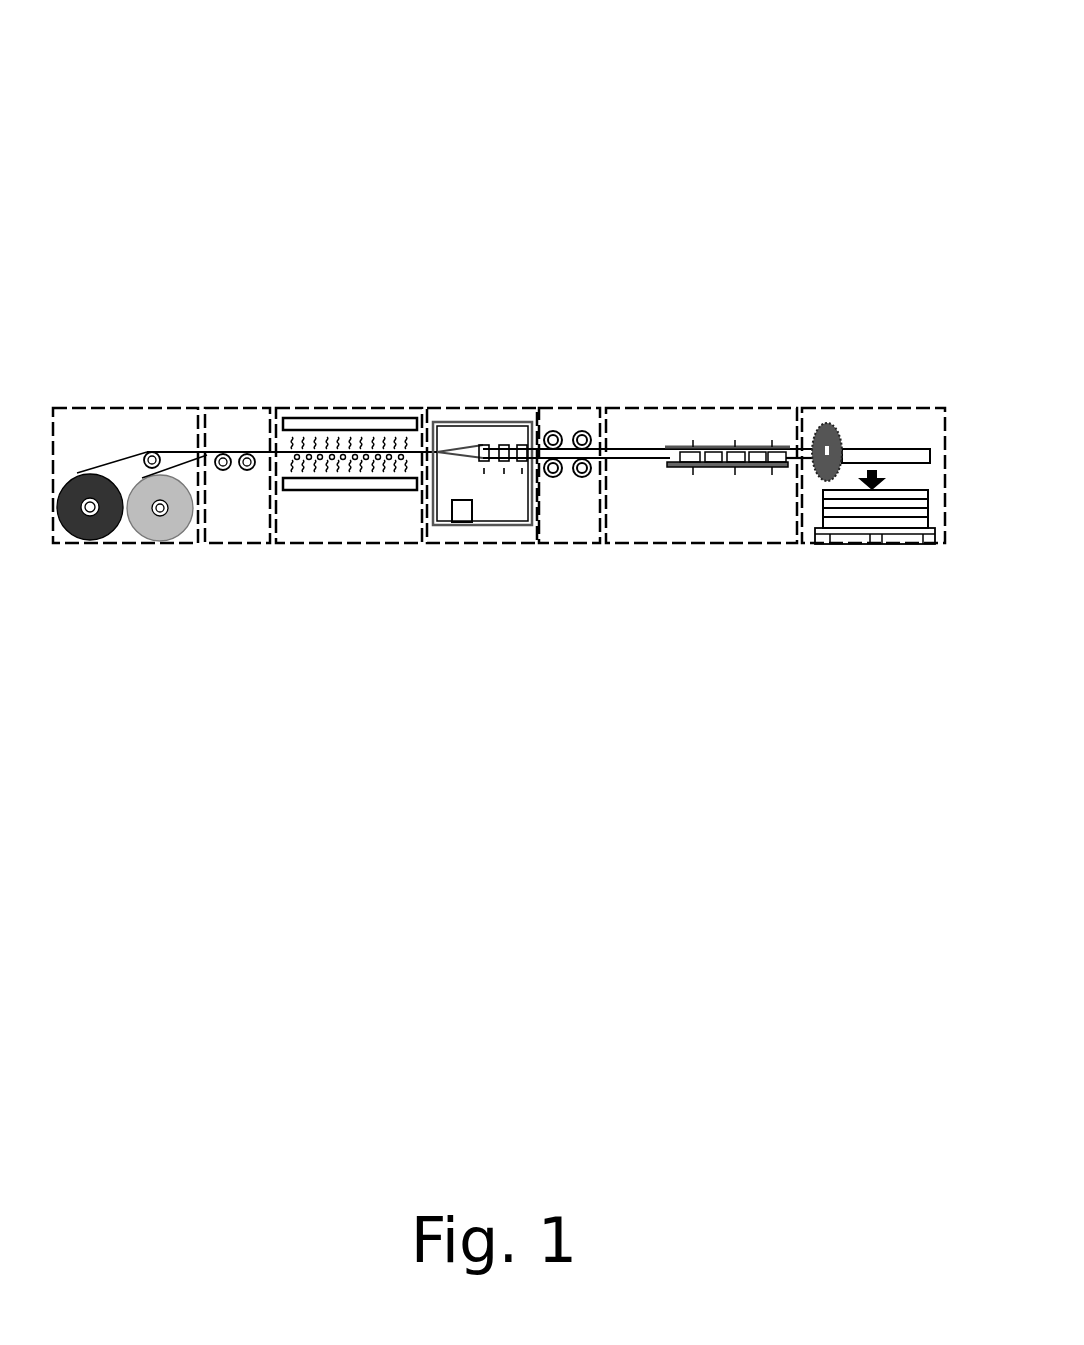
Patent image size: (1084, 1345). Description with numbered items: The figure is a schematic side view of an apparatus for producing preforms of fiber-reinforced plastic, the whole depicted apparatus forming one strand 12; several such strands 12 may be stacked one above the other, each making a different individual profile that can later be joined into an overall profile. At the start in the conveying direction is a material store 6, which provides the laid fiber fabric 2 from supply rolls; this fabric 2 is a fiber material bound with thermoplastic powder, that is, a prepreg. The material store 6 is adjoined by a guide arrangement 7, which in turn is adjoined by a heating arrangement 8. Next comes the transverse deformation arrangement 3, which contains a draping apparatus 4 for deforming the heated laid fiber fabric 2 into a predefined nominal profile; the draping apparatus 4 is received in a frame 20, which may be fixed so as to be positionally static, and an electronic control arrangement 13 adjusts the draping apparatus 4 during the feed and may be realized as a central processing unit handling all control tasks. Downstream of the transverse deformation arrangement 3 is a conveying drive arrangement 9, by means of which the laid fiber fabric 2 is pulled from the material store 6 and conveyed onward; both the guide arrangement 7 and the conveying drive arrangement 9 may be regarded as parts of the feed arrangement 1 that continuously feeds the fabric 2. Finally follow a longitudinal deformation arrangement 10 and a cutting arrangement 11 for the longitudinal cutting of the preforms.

The strand 12 is at (285, 182).
The material store 6 is at (173, 413).
The feed arrangement 1 is at (410, 368).
The guide arrangement 7 is at (238, 413).
The laid fiber fabric 2 is at (263, 453).
The heating arrangement 8 is at (360, 413).
The transverse deformation arrangement 3 is at (487, 413).
The frame 20 is at (500, 527).
The electronic control arrangement 13 is at (462, 513).
The draping apparatus 4 is at (490, 456).
The conveying drive arrangement 9 is at (575, 413).
The longitudinal deformation arrangement 10 is at (710, 413).
The cutting arrangement 11 is at (882, 413).